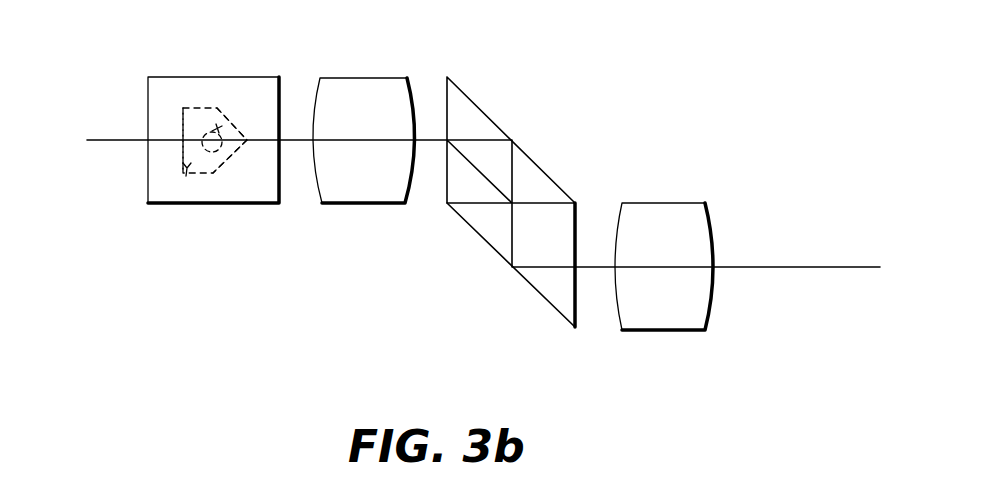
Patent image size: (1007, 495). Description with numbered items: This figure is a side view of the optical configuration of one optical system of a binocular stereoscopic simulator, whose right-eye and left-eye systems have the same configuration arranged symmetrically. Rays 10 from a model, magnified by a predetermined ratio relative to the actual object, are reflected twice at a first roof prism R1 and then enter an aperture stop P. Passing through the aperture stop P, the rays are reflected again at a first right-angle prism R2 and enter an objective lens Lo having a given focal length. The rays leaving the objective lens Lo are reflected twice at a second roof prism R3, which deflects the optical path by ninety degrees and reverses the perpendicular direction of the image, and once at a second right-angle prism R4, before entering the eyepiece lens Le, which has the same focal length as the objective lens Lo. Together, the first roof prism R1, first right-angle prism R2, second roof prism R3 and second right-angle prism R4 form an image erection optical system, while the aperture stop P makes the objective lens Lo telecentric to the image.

The rays 10 is at (121, 139).
The aperture stop P is at (227, 118).
The first roof prism R1 is at (190, 178).
The first right-angle prism R2 is at (247, 199).
The objective lens Lo is at (363, 82).
The second roof prism R3 is at (480, 120).
The second right-angle prism R4 is at (548, 288).
The eyepiece lens Le is at (682, 220).